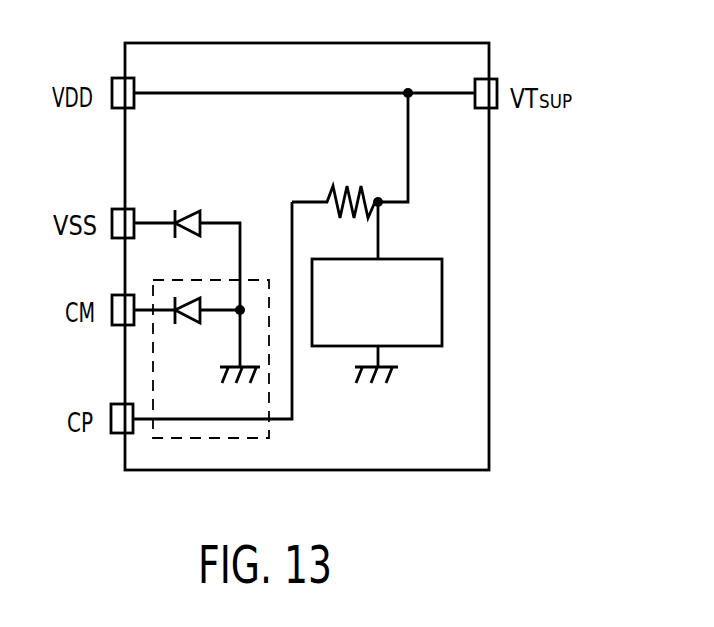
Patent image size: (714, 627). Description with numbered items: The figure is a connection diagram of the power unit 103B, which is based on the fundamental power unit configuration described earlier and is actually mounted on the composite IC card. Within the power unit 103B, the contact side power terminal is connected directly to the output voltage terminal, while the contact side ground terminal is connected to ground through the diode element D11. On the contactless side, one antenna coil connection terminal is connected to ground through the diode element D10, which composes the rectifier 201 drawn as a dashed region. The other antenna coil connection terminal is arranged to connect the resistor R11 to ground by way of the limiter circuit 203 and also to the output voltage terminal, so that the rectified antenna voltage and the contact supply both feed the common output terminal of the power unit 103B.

The power unit 103B is at (392, 43).
The resistor R11 is at (360, 188).
The limiter circuit 203 is at (410, 259).
The diode element D11 is at (200, 212).
The diode element D10 is at (183, 324).
The rectifier 201 is at (269, 438).